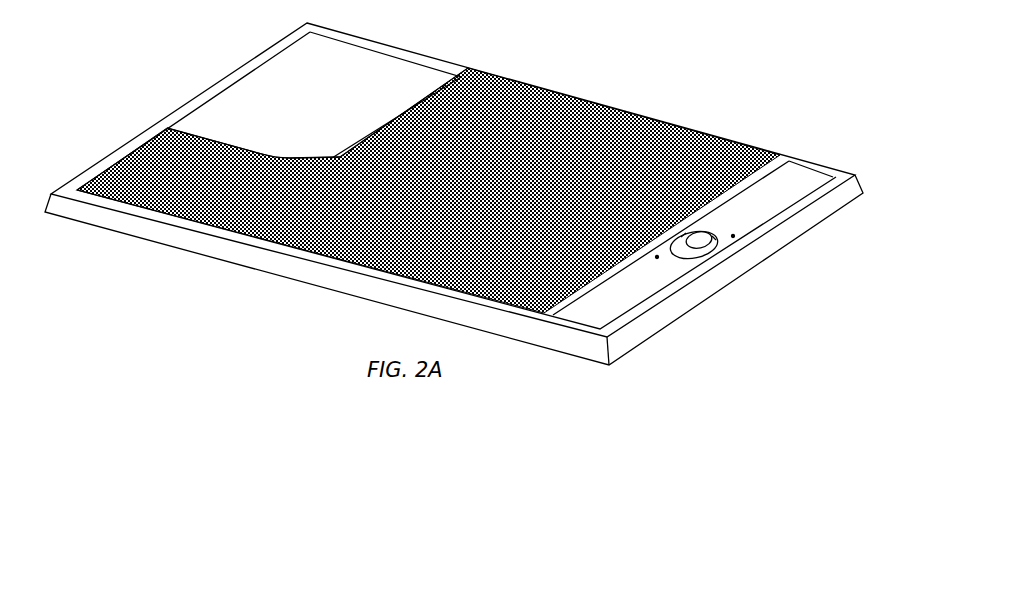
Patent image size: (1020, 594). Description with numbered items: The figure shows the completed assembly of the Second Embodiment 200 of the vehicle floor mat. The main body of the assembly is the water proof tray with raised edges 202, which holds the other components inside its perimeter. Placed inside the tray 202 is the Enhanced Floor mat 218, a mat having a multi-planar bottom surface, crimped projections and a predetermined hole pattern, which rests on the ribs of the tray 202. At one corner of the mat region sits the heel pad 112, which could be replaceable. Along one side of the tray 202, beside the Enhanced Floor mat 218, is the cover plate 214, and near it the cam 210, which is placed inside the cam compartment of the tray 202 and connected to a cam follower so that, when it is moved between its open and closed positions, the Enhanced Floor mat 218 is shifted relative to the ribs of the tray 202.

The Second Embodiment 200 is at (112, 54).
The water proof tray with raised edges 202 is at (197, 240).
The heel pad 112 is at (333, 80).
The Enhanced Floor mat 218 is at (567, 150).
The cover plate 214 is at (780, 190).
The cam 210 is at (707, 250).